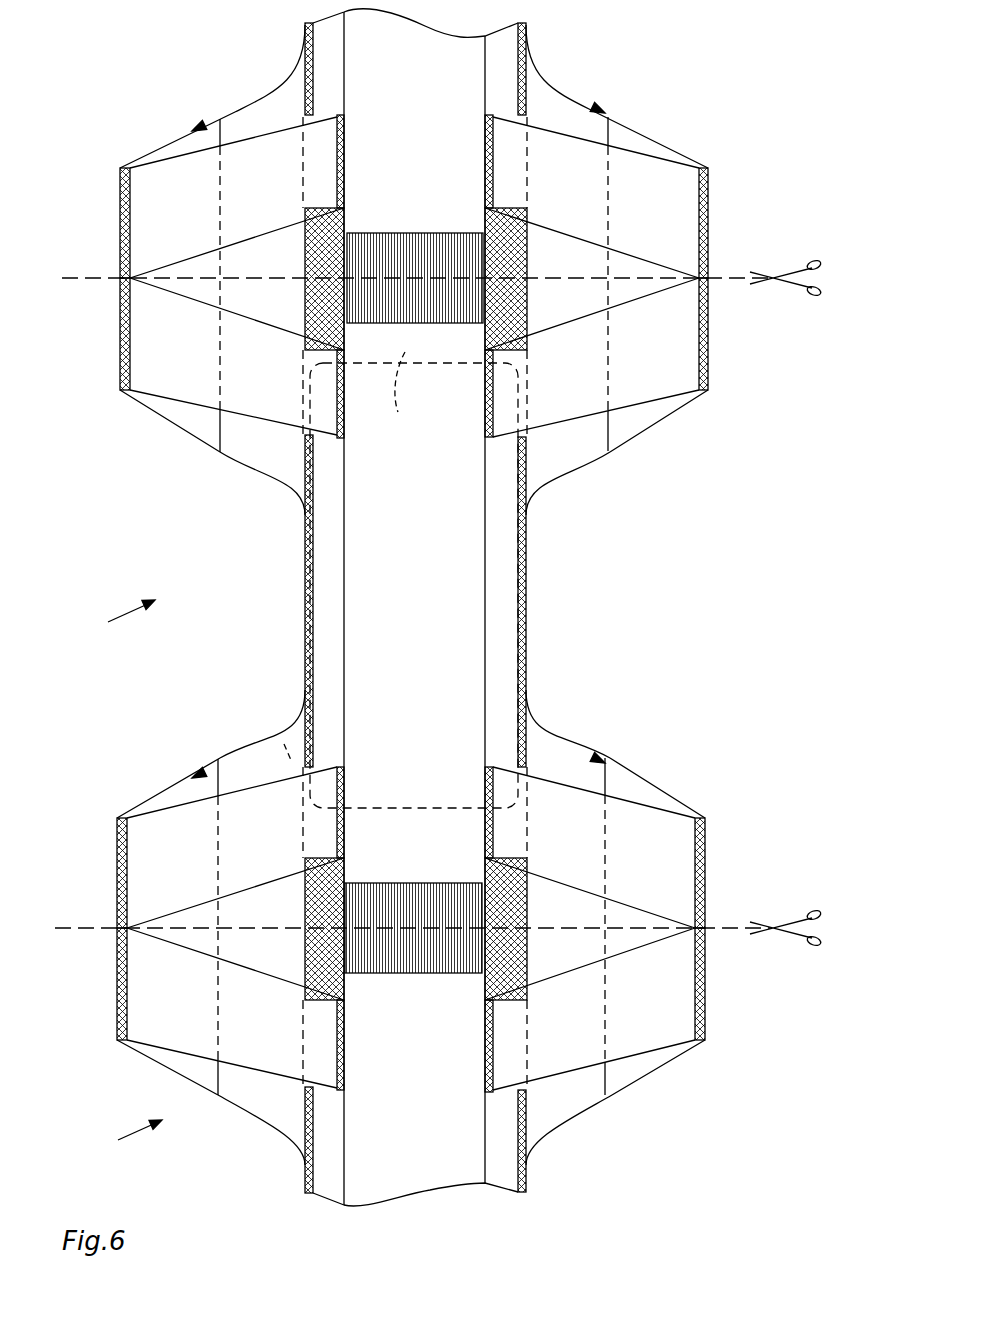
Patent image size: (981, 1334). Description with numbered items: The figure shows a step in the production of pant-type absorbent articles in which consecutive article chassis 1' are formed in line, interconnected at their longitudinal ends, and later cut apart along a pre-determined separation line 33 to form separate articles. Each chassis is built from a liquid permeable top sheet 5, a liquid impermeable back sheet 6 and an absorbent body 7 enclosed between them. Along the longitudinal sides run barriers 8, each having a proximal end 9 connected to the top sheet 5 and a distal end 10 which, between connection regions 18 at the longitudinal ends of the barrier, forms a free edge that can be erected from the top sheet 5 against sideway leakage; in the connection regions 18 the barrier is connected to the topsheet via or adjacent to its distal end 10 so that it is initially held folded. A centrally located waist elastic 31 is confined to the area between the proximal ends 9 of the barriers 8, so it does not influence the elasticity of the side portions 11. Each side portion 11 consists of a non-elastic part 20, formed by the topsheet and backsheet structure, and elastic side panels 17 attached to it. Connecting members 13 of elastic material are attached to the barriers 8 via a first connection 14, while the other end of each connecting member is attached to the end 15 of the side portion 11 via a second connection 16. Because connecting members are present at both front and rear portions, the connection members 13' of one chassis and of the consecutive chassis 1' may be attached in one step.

The article chassis 1' is at (116, 622).
The top sheet 5 is at (371, 656).
The back sheet 6 is at (282, 742).
The absorbent body 7 is at (408, 367).
The barrier 8 is at (322, 565).
The proximal end 9 is at (305, 615).
The distal end 10 is at (485, 545).
The side portions 11 is at (197, 128).
The connecting member 13 is at (413, 606).
The connecting member 13' is at (235, 683).
The first connection 14 is at (485, 158).
The end of side portion 15 is at (120, 200).
The second connection 16 is at (120, 348).
The elastic side panel 17 is at (185, 147).
The connection region 18 is at (315, 312).
The non-elastic part 20 is at (265, 450).
The waist elastic 31 is at (395, 250).
The separation line 33 is at (78, 278).